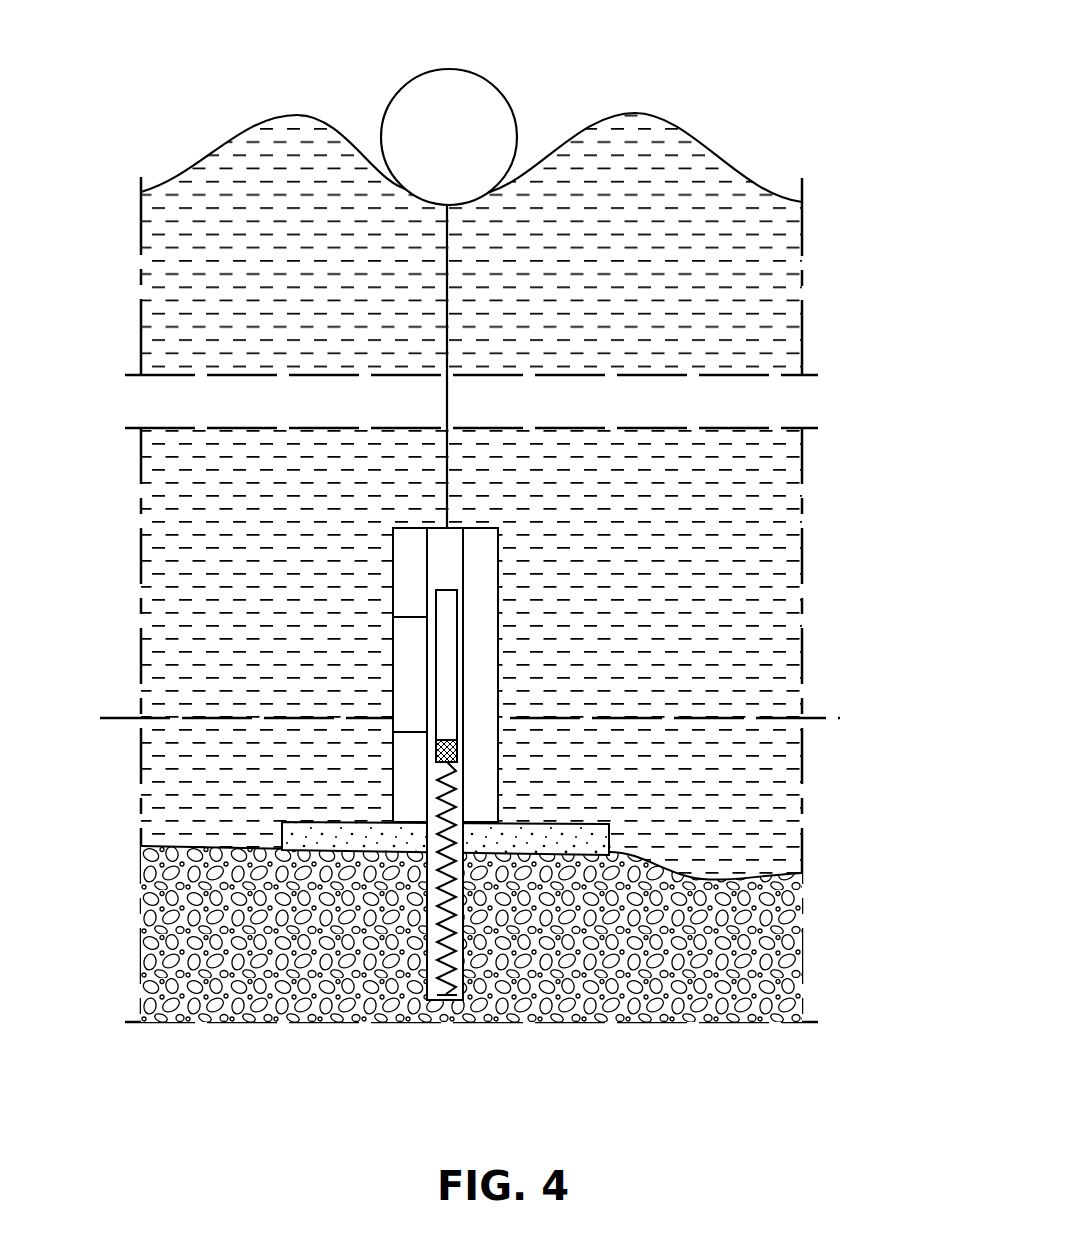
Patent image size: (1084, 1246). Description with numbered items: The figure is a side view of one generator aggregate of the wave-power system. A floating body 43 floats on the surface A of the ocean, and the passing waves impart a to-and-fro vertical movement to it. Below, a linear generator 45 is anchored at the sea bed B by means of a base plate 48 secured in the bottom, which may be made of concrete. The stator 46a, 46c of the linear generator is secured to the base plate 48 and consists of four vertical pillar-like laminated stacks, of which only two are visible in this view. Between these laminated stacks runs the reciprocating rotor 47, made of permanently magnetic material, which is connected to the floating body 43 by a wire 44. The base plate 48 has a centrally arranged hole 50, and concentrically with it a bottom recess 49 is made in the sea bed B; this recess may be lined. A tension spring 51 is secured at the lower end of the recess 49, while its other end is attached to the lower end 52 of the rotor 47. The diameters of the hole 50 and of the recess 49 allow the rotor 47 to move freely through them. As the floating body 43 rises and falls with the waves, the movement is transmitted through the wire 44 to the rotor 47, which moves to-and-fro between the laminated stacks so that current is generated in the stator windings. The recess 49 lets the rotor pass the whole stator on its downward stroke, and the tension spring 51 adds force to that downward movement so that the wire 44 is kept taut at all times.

The floating body 43 is at (478, 105).
The wire 44 is at (448, 257).
The linear generator 45 is at (528, 555).
The stator 46a is at (393, 578).
The stator 46c is at (498, 592).
The reciprocating rotor 47 is at (444, 637).
The base plate 48 is at (575, 822).
The bottom recess 49 is at (462, 900).
The hole 50 is at (427, 852).
The tension spring 51 is at (463, 865).
The lower end of the rotor 52 is at (457, 750).
The surface of the ocean A is at (600, 118).
The seabed B is at (722, 877).